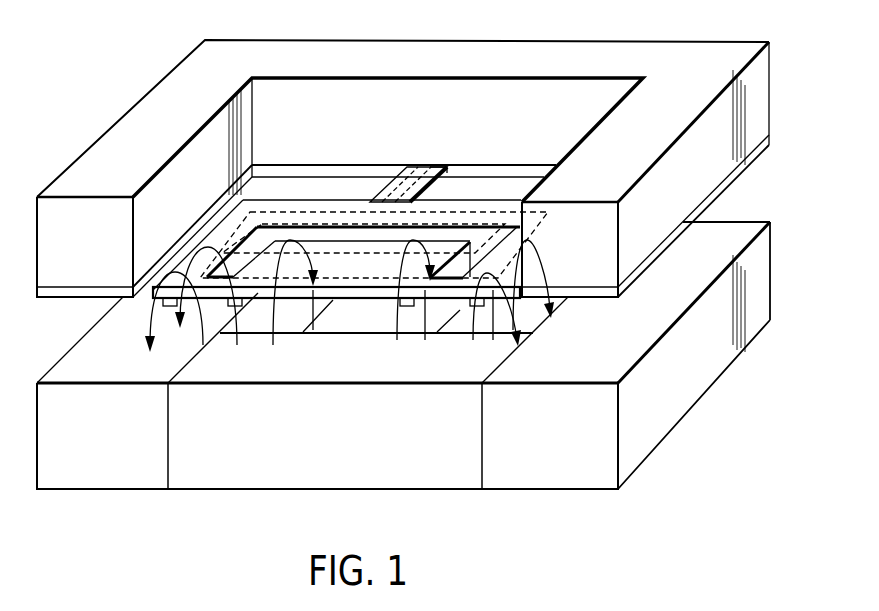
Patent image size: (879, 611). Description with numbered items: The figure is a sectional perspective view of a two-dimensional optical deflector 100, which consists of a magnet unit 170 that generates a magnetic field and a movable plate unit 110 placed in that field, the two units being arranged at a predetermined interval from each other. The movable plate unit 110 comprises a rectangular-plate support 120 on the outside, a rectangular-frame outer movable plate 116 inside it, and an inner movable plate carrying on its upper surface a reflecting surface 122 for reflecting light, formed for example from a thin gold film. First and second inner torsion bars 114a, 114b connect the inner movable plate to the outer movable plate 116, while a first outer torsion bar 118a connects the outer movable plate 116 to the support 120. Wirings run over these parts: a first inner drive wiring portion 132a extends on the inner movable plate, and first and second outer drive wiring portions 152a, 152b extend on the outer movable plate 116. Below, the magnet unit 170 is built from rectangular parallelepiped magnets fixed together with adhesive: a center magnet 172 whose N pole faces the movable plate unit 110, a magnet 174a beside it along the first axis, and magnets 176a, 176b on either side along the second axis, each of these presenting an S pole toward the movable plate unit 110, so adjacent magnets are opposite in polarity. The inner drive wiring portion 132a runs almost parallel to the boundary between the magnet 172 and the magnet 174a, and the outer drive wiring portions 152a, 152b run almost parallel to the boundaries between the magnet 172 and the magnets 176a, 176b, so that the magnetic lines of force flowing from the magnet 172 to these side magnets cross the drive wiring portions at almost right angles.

The two-dimensional optical deflector 100 is at (100, 70).
The movable plate unit 110 is at (800, 84).
The support 120 is at (356, 42).
The reflecting surface 122 is at (317, 240).
The first inner drive wiring portion 132a is at (335, 250).
The outer movable plate 116 is at (460, 200).
The first outer torsion bar 118a is at (427, 167).
The first outer drive wiring portion 152a is at (487, 270).
The second outer drive wiring portion 152b is at (235, 215).
The first inner torsion bar 114a is at (388, 297).
The second inner torsion bar 114b is at (202, 323).
The magnet unit 170 is at (802, 242).
The magnet 172 is at (393, 490).
The magnet 174a is at (343, 312).
The magnet 176a is at (698, 370).
The magnet 176b is at (77, 358).